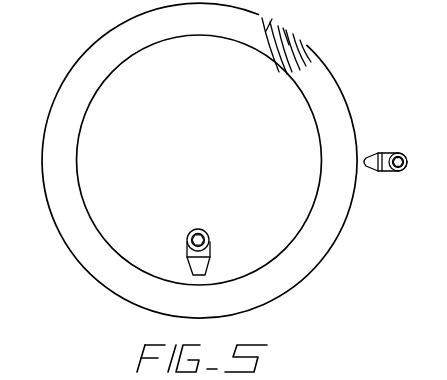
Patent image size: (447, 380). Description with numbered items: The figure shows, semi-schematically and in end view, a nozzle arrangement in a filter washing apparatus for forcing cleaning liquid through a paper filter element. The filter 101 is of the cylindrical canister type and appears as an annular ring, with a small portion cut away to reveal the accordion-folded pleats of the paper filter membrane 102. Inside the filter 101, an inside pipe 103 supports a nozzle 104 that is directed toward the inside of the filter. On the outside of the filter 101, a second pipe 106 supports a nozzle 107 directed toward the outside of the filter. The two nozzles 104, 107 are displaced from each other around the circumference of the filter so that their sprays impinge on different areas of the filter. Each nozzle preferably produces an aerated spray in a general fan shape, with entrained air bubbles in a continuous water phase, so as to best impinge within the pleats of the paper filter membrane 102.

The filter 101 is at (339, 89).
The paper filter membrane 102 is at (295, 32).
The inside pipe 103 is at (211, 236).
The nozzle 104 is at (211, 255).
The second pipe 106 is at (408, 153).
The nozzle 107 is at (380, 173).